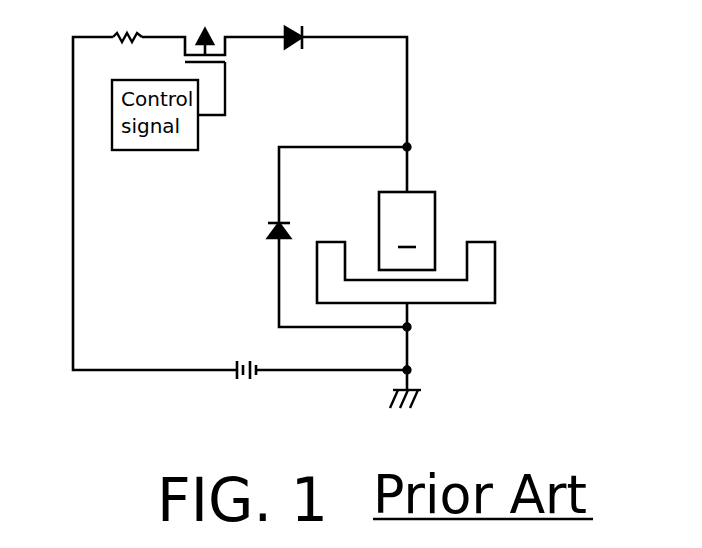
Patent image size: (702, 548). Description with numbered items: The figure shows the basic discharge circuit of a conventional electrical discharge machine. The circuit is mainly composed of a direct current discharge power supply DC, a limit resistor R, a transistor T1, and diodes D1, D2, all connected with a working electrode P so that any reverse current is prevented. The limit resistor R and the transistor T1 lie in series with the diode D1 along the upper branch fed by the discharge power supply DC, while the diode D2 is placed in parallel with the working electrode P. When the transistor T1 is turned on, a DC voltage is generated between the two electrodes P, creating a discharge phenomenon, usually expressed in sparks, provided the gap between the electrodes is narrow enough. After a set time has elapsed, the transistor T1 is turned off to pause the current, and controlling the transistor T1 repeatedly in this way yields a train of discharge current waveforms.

The limit resistor R is at (127, 23).
The transistor T1 is at (205, 31).
The diode D1 is at (295, 24).
The diode D2 is at (257, 234).
The working electrode P is at (406, 247).
The direct current discharge power supply DC is at (247, 389).